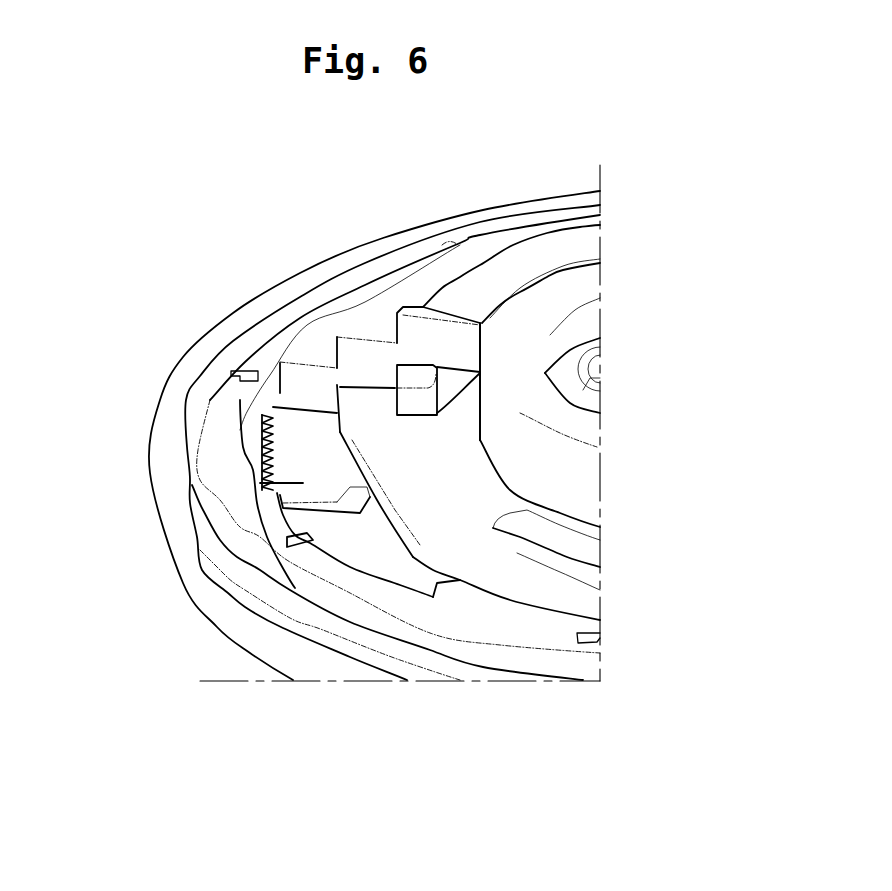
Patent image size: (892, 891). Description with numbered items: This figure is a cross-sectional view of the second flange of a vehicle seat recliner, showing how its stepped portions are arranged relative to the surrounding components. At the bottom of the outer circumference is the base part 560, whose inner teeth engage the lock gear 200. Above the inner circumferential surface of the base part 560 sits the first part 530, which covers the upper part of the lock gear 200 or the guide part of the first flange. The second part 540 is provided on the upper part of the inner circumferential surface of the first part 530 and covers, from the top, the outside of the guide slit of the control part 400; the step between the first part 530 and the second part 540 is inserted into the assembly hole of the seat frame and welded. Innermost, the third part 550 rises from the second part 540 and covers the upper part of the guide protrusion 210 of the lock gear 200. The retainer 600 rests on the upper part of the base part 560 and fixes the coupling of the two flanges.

The lock gear 200 is at (303, 483).
The guide protrusion 210 is at (260, 432).
The control part 400 is at (583, 498).
The first part 530 is at (327, 330).
The second part 540 is at (435, 278).
The third part 550 is at (535, 267).
The base part 560 is at (413, 400).
The retainer 600 is at (530, 657).